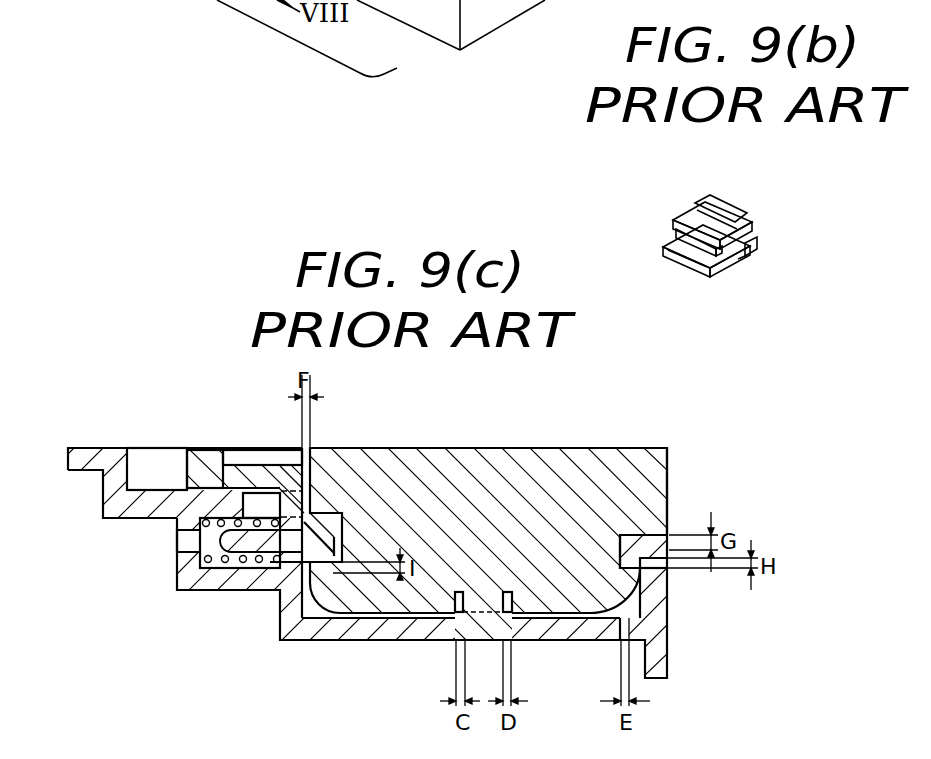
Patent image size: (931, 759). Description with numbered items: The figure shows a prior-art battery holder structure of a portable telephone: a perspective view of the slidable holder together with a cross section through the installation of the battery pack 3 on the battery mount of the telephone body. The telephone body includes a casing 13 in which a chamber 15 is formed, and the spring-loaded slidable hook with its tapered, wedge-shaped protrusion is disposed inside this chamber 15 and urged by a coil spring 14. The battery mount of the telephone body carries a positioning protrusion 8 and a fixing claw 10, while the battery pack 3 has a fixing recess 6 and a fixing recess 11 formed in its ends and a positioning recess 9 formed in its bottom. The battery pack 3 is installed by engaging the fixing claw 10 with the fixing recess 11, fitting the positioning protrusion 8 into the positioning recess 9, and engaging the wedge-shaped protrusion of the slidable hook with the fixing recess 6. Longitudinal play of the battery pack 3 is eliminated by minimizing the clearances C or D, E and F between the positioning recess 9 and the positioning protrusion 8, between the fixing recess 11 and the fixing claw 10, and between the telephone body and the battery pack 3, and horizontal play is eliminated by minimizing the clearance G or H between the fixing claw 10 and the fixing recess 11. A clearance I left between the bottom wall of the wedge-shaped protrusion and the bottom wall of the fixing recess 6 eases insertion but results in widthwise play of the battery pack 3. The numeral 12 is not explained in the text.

The battery pack 3 is at (458, 452).
The fixing recess 6 is at (328, 513).
The positioning protrusion 8 is at (473, 598).
The positioning recess 9 is at (483, 593).
The fixing claw 10 is at (645, 533).
The fixing recess 11 is at (660, 510).
The projection 12 is at (758, 248).
The casing 13 is at (110, 477).
The coil spring 14 is at (224, 563).
The chamber 15 is at (260, 562).